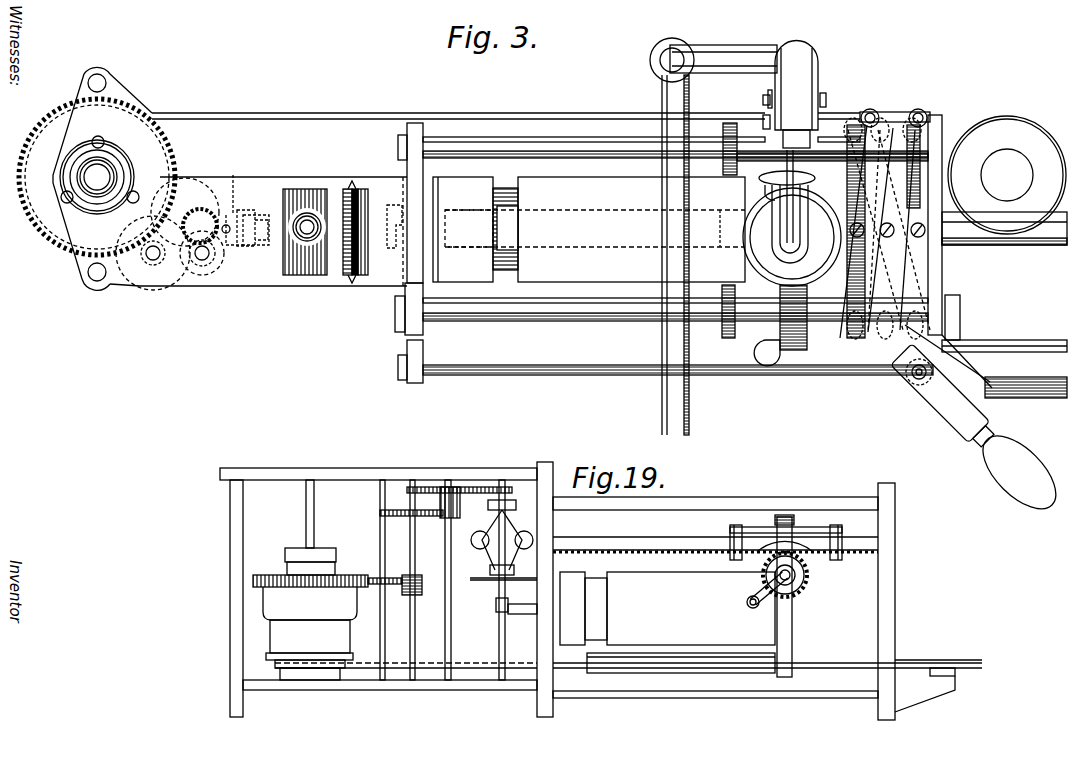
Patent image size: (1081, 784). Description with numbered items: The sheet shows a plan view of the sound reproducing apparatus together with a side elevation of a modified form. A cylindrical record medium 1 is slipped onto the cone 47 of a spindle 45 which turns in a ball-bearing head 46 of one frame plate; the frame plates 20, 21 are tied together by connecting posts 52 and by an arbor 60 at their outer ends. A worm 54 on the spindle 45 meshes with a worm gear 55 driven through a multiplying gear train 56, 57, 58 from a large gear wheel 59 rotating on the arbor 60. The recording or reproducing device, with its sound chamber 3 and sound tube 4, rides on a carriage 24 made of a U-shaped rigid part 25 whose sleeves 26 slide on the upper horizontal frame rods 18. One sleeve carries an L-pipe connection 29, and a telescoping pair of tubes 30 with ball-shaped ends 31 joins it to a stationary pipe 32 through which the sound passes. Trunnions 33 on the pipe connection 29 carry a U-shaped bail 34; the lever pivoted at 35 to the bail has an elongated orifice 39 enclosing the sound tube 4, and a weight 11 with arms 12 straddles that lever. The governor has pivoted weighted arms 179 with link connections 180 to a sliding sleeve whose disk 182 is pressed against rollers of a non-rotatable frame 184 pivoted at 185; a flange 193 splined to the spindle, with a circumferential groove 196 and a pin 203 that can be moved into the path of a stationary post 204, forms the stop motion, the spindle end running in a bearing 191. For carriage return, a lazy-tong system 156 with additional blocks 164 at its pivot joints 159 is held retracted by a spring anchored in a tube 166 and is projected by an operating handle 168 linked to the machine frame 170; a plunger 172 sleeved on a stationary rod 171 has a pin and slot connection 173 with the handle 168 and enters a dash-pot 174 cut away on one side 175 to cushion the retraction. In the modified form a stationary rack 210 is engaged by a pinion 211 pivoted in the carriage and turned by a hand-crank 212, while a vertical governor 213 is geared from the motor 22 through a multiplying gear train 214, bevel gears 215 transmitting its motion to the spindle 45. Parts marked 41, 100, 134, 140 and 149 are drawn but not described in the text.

In FIG. 3, the record medium 1 is at (595, 229).
In FIG. 19, the record medium 1 is at (667, 608).
In FIG. 3, the sound chamber 3 is at (750, 260).
In FIG. 3, the sound tube 4 is at (790, 201).
In FIG. 3, the weight 11 is at (782, 224).
In FIG. 3, the arms 12 is at (765, 146).
In FIG. 3, the horizontal rods 18 is at (500, 146).
In FIG. 3, the frame plate 20 is at (233, 214).
In FIG. 3, the frame plate 21 is at (252, 282).
In FIG. 3, the motor 22 is at (22, 254).
In FIG. 3, the carriage 24 is at (807, 335).
In FIG. 3, the U-shaped rigid metal part 25 is at (795, 352).
In FIG. 3, the sleeves 26 is at (723, 130).
In FIG. 3, the L-pipe connection 29 is at (796, 95).
In FIG. 3, the telescoping pair of tubes 30 is at (727, 45).
In FIG. 3, the ball shaped ends 31 is at (651, 60).
In FIG. 3, the stationary pipe 32 is at (661, 103).
In FIG. 3, the trunnions 33 is at (763, 98).
In FIG. 3, the U-shaped frame or bail 34 is at (770, 92).
In FIG. 3, the pivot 35 is at (826, 107).
In FIG. 3, the elongated orifice 39 is at (758, 183).
In FIG. 3, the ring 41 is at (787, 171).
In FIG. 3, the spindle 45 is at (393, 231).
In FIG. 19, the spindle 45 is at (522, 614).
In FIG. 3, the head 46 is at (433, 197).
In FIG. 3, the cone 47 is at (505, 229).
In FIG. 3, the connecting posts 52 is at (106, 83).
In FIG. 3, the worm 54 is at (185, 212).
In FIG. 3, the worm gear 55 is at (208, 255).
In FIG. 3, the gear of multiplying gear train 56 is at (210, 255).
In FIG. 3, the gear of multiplying gear train 57 is at (170, 286).
In FIG. 3, the gear of multiplying gear train 58 is at (153, 253).
In FIG. 3, the large gear wheel 59 is at (163, 150).
In FIG. 3, the arbor 60 is at (99, 175).
In FIG. 3, the wheel 100 is at (1007, 175).
In FIG. 3, the bracket 134 is at (763, 118).
In FIG. 3, the pin 140 is at (783, 128).
In FIG. 3, the hook loop 149 is at (767, 353).
In FIG. 3, the lazy-tong system 156 is at (900, 170).
In FIG. 3, the pivot joints 159 is at (893, 105).
In FIG. 3, the additional blocks 164 is at (905, 210).
In FIG. 3, the tube 166 is at (1004, 240).
In FIG. 3, the operating handle 168 is at (1003, 430).
In FIG. 3, the frame of the machine 170 is at (922, 110).
In FIG. 3, the stationary rod 171 is at (795, 376).
In FIG. 3, the plunger 172 is at (998, 377).
In FIG. 3, the pin and slot connection 173 is at (908, 377).
In FIG. 3, the dash-pot 174 is at (1035, 340).
In FIG. 3, the cut-away side 175 is at (980, 395).
In FIG. 3, the weighted arms 179 is at (286, 242).
In FIG. 3, the link connections 180 is at (318, 237).
In FIG. 3, the disk 182 is at (362, 275).
In FIG. 3, the non-rotatable frame 184 is at (344, 195).
In FIG. 3, the pivot 185 is at (353, 180).
In FIG. 3, the bearing 191 is at (396, 205).
In FIG. 3, the flange 193 is at (256, 214).
In FIG. 3, the circumferential groove 196 is at (240, 208).
In FIG. 3, the pin 203 is at (238, 186).
In FIG. 3, the stationary post 204 is at (222, 226).
In FIG. 19, the stationary rack 210 is at (583, 545).
In FIG. 19, the pinion 211 is at (807, 570).
In FIG. 19, the hand-crank 212 is at (747, 602).
In FIG. 19, the vertical governor 213 is at (480, 518).
In FIG. 19, the multiplying gear train 214 is at (395, 516).
In FIG. 19, the bevel gears 215 is at (496, 606).